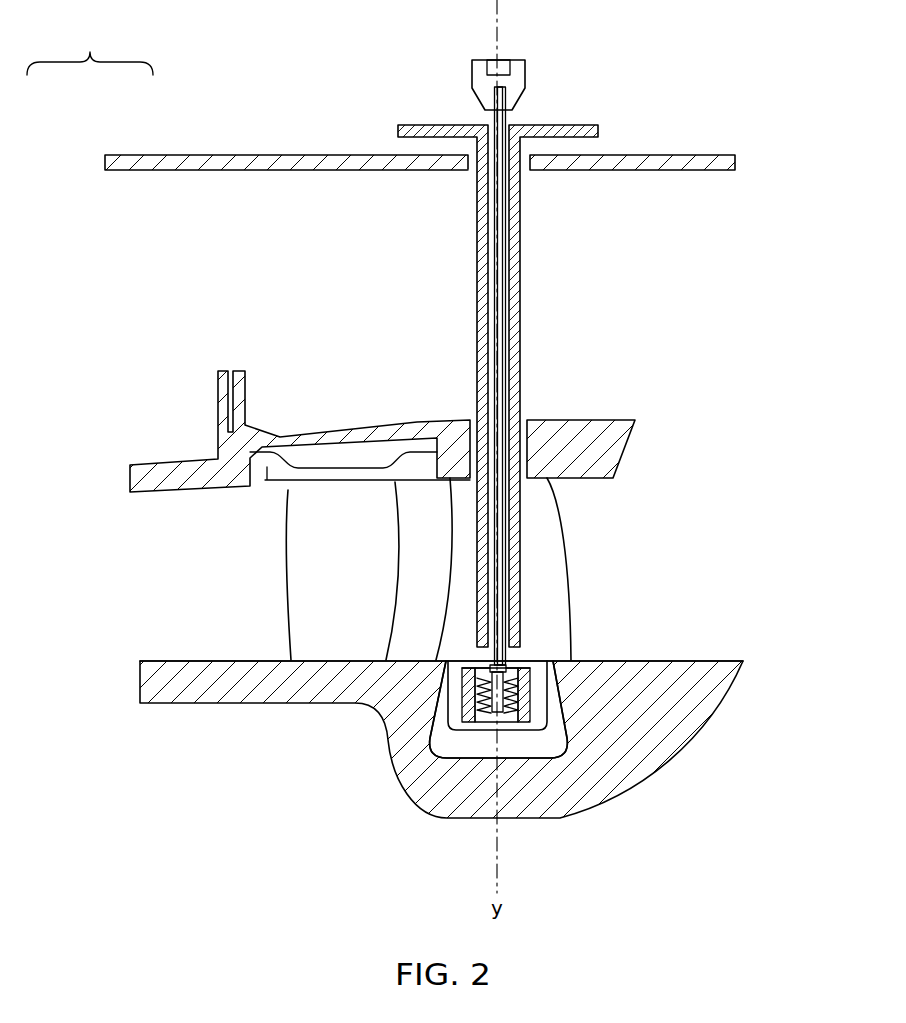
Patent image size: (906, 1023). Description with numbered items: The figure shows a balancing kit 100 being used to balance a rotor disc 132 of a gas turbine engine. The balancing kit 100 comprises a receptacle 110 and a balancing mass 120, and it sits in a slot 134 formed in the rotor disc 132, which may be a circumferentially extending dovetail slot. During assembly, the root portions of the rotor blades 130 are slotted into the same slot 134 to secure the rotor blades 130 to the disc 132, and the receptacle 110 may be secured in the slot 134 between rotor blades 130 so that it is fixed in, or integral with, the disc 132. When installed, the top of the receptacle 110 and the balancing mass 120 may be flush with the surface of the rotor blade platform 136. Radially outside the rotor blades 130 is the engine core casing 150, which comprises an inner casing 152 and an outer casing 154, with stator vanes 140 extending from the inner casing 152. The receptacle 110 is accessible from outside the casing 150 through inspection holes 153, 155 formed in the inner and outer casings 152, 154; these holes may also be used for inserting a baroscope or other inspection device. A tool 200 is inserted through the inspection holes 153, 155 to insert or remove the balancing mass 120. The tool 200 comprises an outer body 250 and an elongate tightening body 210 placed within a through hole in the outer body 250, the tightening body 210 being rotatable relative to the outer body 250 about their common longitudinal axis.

The balancing kit 100 is at (524, 649).
The receptacle 110 is at (452, 694).
The balancing mass 120 is at (495, 712).
The rotor blade 130 is at (550, 538).
The rotor disc 132 is at (650, 757).
The slot 134 is at (545, 733).
The rotor blade platform 136 is at (727, 660).
The stator vane 140 is at (300, 585).
The engine core casing 150 is at (90, 54).
The inner casing 152 is at (152, 468).
The inspection hole 153 is at (532, 420).
The outer casing 154 is at (110, 155).
The inspection hole 155 is at (470, 168).
The tool 200 is at (546, 92).
The tightening body 210 is at (498, 290).
The outer body 250 is at (520, 336).